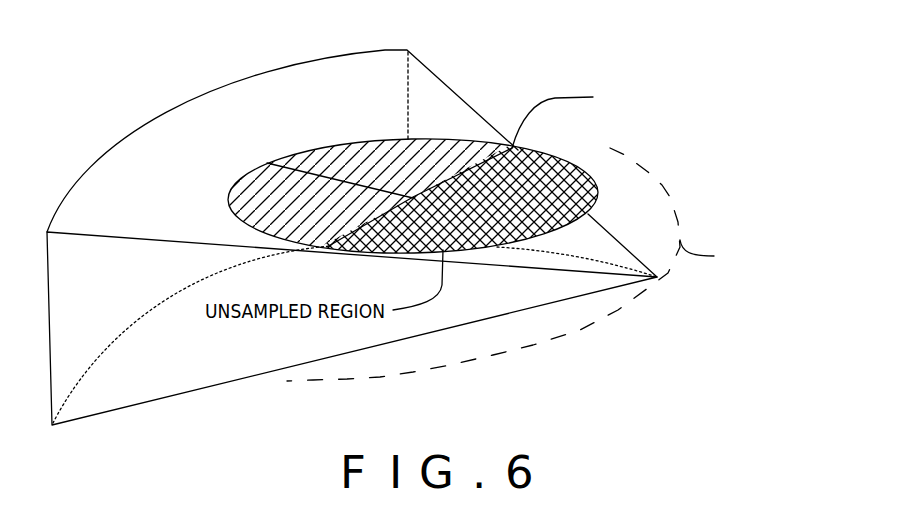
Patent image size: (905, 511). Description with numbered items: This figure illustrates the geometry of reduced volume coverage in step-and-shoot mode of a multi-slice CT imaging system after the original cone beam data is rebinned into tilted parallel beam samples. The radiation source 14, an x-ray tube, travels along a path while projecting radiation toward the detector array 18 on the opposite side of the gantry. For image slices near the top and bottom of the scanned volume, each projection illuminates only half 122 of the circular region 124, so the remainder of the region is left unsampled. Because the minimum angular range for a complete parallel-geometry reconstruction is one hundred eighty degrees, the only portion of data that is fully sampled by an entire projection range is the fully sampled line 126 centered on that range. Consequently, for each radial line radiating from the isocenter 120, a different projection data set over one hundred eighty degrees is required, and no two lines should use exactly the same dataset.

The detector array 18 is at (127, 138).
The isocenter 120 is at (413, 199).
The half of circular region 122 is at (265, 183).
The circular region 124 is at (596, 183).
The fully sampled line 126 is at (381, 188).
The radiation source 14 is at (665, 280).